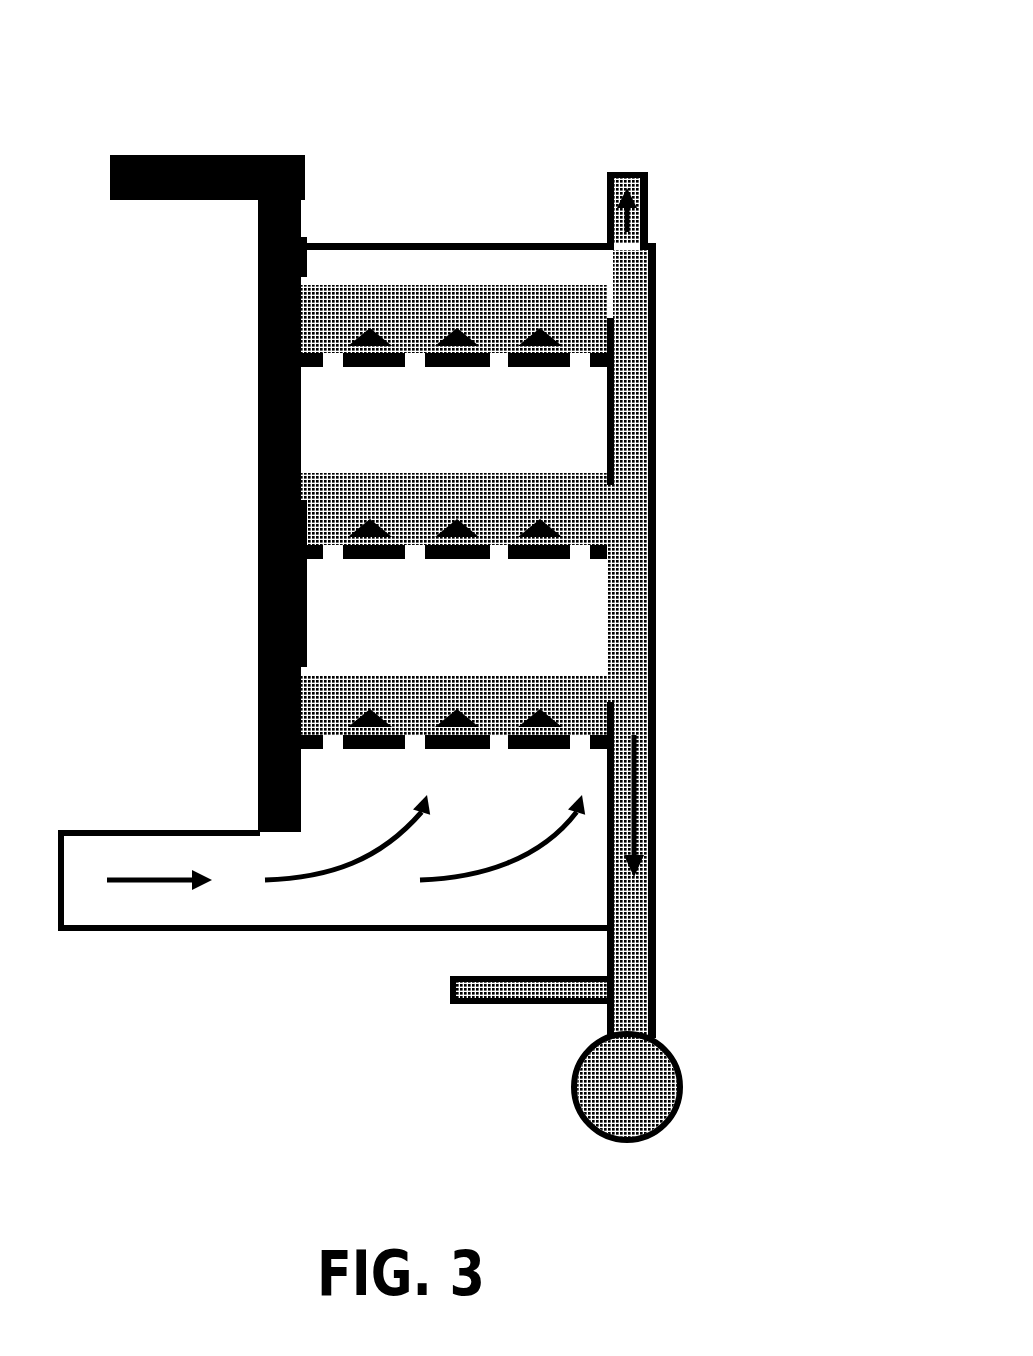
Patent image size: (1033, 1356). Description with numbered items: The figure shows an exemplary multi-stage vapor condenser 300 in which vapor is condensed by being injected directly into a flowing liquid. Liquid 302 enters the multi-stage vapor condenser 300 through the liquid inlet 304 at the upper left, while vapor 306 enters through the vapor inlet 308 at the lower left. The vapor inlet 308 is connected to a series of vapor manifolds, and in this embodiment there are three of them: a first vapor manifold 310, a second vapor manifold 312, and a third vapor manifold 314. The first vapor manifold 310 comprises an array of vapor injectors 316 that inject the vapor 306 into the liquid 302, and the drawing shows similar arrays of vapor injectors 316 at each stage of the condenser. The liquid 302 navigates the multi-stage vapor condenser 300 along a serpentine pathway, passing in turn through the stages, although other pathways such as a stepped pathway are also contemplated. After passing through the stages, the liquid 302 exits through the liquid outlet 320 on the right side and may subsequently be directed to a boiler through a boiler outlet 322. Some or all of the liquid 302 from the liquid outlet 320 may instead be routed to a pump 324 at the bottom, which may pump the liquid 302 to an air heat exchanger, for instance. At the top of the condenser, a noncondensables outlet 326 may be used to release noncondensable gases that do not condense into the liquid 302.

The multi-stage vapor condenser 300 is at (716, 50).
The liquid 302 is at (290, 232).
The liquid inlet 304 is at (200, 192).
The vapor 306 is at (328, 708).
The vapor inlet 308 is at (160, 905).
The first vapor manifold 310 is at (353, 797).
The second vapor manifold 312 is at (582, 605).
The third vapor manifold 314 is at (298, 430).
The vapor injectors 316 is at (537, 353).
The liquid outlet 320 is at (635, 905).
The boiler outlet 322 is at (495, 988).
The pump 324 is at (650, 1070).
The noncondensables outlet 326 is at (632, 182).